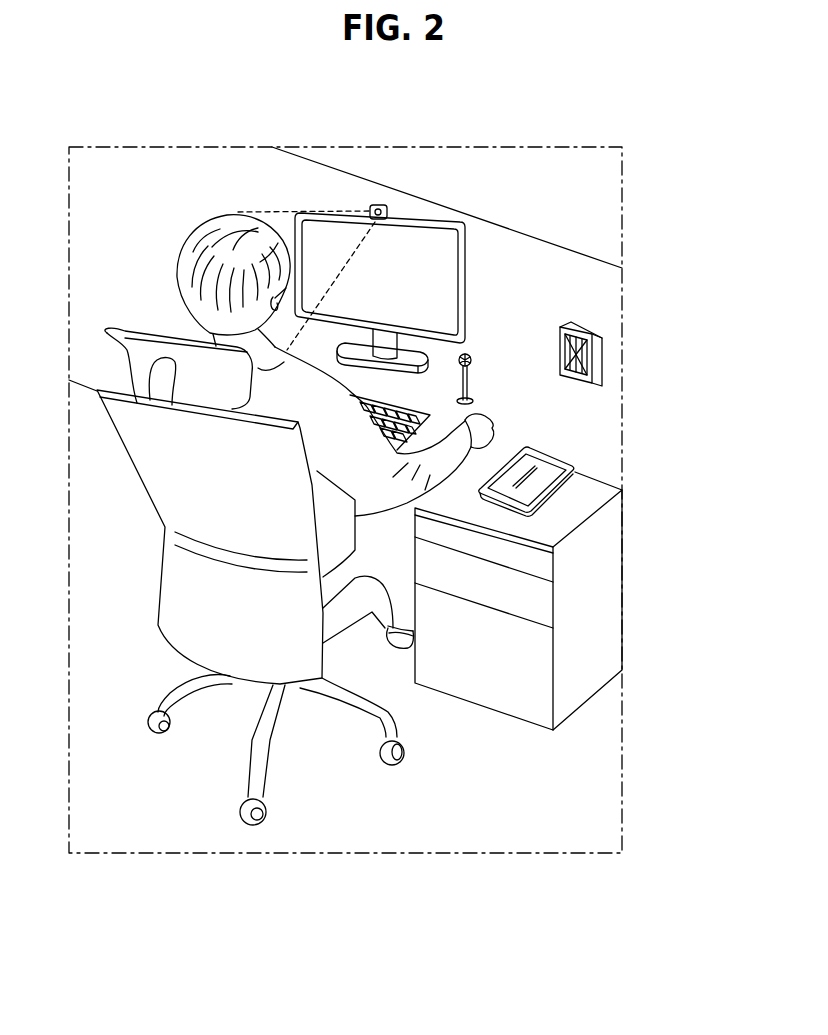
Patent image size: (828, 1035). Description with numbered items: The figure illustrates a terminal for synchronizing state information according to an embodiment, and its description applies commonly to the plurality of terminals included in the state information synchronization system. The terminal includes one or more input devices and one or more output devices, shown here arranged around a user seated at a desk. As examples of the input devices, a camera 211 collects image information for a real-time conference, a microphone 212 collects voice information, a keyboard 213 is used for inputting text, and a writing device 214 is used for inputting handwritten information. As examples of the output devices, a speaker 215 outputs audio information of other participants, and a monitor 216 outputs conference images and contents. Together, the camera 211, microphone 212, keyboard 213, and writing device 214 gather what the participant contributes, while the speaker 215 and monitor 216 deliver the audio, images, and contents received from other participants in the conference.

The camera 211 is at (378, 203).
The microphone 212 is at (471, 355).
The keyboard 213 is at (415, 411).
The writing device 214 is at (540, 480).
The speaker 215 is at (598, 357).
The monitor 216 is at (443, 282).